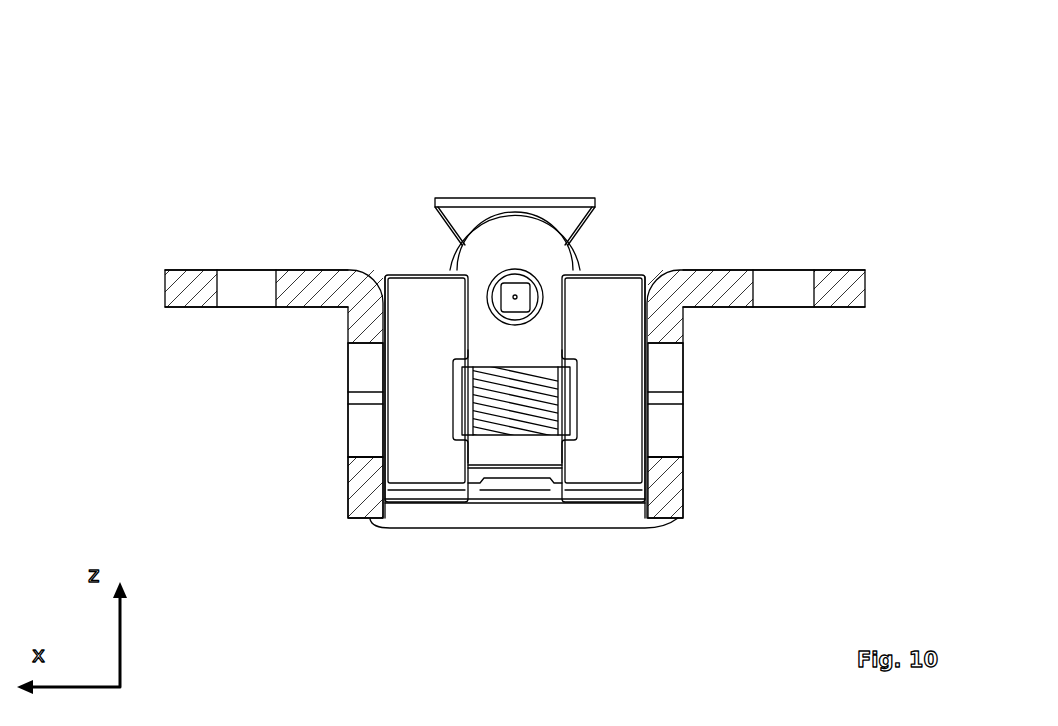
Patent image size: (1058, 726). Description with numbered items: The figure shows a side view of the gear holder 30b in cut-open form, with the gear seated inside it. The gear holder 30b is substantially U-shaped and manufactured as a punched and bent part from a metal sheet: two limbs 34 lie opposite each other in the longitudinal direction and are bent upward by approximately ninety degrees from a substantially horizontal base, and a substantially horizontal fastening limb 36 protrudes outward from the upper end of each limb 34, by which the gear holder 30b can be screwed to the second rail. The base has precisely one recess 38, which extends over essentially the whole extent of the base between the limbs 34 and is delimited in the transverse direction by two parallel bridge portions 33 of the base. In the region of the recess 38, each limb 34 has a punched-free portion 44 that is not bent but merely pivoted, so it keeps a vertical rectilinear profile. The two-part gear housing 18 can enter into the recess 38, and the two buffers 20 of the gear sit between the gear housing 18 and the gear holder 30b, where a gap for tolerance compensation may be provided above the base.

The gear holder 30b is at (231, 97).
The gear housing 18 is at (536, 255).
The buffers 20 is at (430, 305).
The bridge portions 33 is at (502, 518).
The limbs 34 is at (358, 400).
The fastening limbs 36 is at (178, 297).
The recess 38 is at (603, 522).
The portion 44 is at (358, 508).